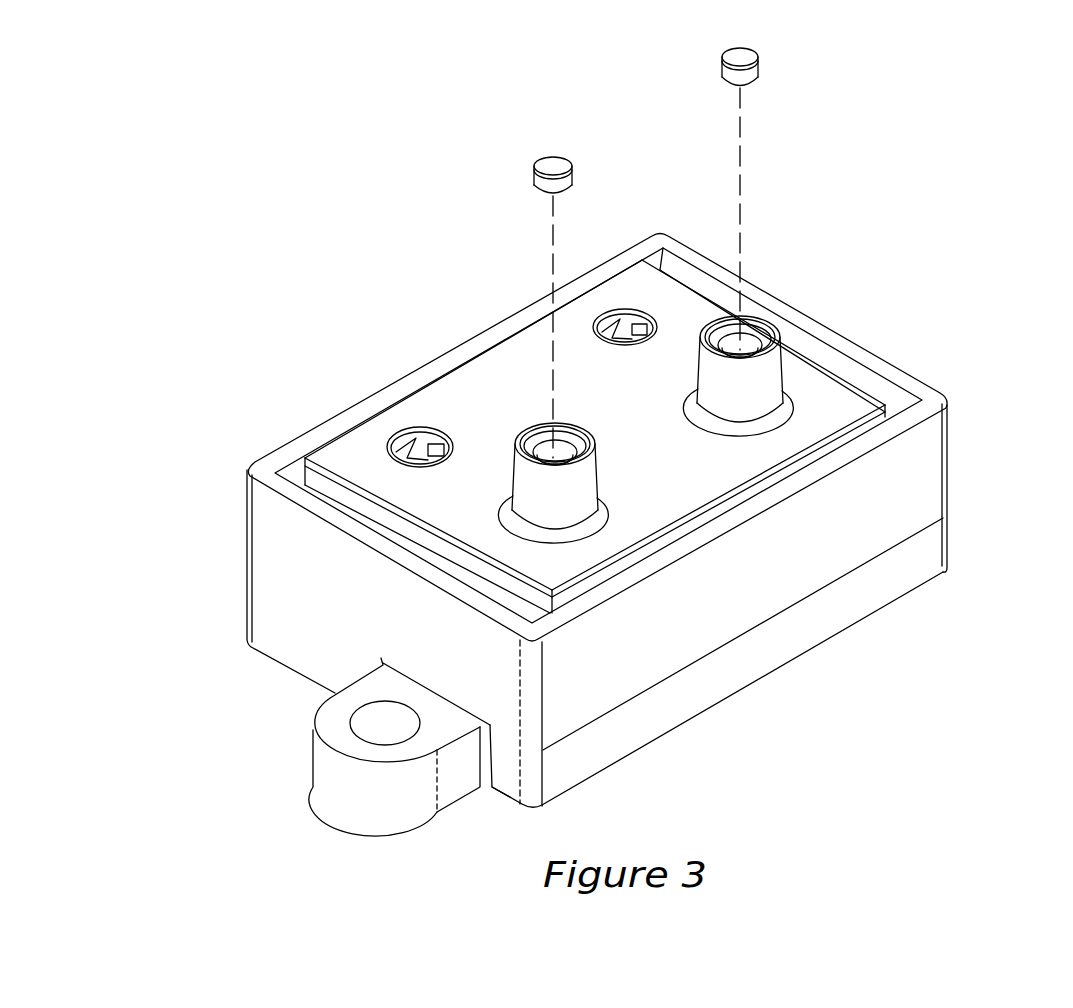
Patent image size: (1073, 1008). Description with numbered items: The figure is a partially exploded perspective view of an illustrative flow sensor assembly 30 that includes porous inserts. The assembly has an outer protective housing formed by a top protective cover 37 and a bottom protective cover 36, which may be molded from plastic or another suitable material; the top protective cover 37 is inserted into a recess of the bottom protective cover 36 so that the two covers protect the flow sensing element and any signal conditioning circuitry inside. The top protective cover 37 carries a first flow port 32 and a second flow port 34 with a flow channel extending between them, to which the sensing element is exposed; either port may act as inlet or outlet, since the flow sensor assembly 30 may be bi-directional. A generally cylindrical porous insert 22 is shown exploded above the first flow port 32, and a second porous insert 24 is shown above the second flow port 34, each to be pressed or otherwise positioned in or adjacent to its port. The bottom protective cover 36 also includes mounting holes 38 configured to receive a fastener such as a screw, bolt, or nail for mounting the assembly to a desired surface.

The porous insert 22 is at (572, 179).
The porous insert 24 is at (758, 70).
The flow sensor assembly 30 is at (955, 195).
The first flow port 32 is at (525, 482).
The second flow port 34 is at (765, 380).
The bottom protective cover 36 is at (270, 529).
The top protective cover 37 is at (365, 448).
The mounting hole 38 is at (373, 723).